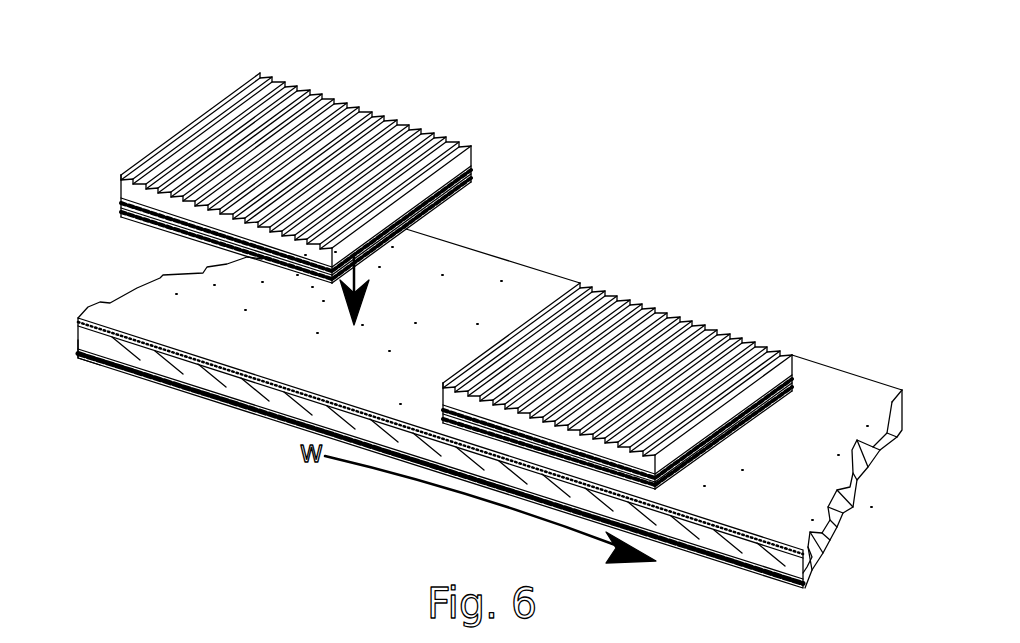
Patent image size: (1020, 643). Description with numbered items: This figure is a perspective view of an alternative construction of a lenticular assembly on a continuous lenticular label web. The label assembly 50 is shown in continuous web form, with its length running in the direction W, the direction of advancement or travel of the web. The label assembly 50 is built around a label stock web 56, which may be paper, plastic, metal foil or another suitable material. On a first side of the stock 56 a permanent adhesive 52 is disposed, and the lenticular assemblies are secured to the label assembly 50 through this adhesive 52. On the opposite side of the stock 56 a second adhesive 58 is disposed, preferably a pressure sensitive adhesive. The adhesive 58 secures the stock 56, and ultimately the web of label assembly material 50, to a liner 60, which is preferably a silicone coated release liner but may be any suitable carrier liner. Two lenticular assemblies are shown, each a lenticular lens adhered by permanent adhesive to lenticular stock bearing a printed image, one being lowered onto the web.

The label assembly 50 is at (474, 408).
The permanent adhesive 52 is at (120, 318).
The label stock web 56 is at (153, 362).
The second adhesive 58 is at (78, 348).
The liner 60 is at (167, 383).